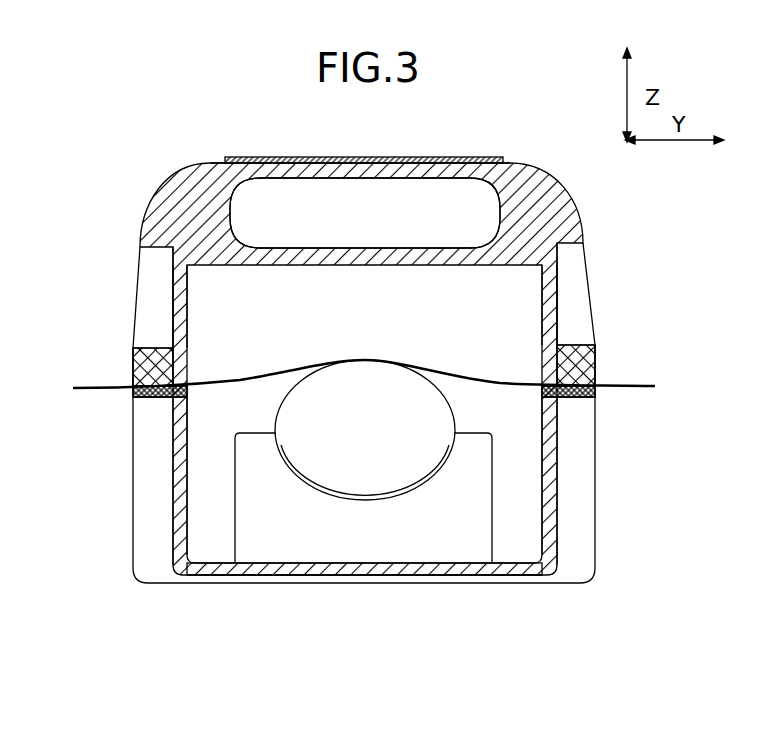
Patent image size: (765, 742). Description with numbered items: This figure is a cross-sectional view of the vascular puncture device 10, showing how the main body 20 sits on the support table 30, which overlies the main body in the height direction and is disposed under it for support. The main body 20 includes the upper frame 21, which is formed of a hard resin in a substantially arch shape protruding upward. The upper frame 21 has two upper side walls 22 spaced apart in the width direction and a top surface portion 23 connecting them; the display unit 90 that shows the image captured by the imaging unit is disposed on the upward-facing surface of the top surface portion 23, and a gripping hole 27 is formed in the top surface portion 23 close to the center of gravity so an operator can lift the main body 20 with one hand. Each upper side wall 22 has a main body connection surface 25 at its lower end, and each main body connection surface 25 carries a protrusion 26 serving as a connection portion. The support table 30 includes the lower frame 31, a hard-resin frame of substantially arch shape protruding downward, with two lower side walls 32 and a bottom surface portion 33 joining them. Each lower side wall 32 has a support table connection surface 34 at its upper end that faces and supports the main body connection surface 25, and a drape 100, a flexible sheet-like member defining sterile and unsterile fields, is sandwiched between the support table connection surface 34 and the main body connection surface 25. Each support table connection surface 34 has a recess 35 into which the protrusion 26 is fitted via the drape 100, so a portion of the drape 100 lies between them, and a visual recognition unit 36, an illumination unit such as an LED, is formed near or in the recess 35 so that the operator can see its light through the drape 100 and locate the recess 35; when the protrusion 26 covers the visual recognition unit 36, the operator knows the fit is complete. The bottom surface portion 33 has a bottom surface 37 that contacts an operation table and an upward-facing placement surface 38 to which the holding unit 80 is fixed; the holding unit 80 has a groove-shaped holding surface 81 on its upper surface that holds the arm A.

The vascular puncture device 10 is at (54, 93).
The main body 20 is at (180, 168).
The upper frame 21 is at (200, 165).
The upper side walls 22 is at (150, 228).
The top surface portion 23 is at (255, 160).
The main body connection surface 25 is at (178, 405).
The protrusion 26 is at (133, 395).
The gripping hole 27 is at (318, 205).
The support table 30 is at (131, 502).
The lower frame 31 is at (151, 514).
The lower side walls 32 is at (148, 553).
The bottom surface portion 33 is at (327, 582).
The support table connection surface 34 is at (143, 345).
The recess 35 is at (165, 400).
The visual recognition unit 36 is at (133, 372).
The bottom surface 37 is at (411, 586).
The placement surface 38 is at (462, 560).
The holding unit 80 is at (363, 552).
The holding surface 81 is at (350, 500).
The display unit 90 is at (462, 157).
The drape 100 is at (640, 382).
The arm A is at (395, 388).